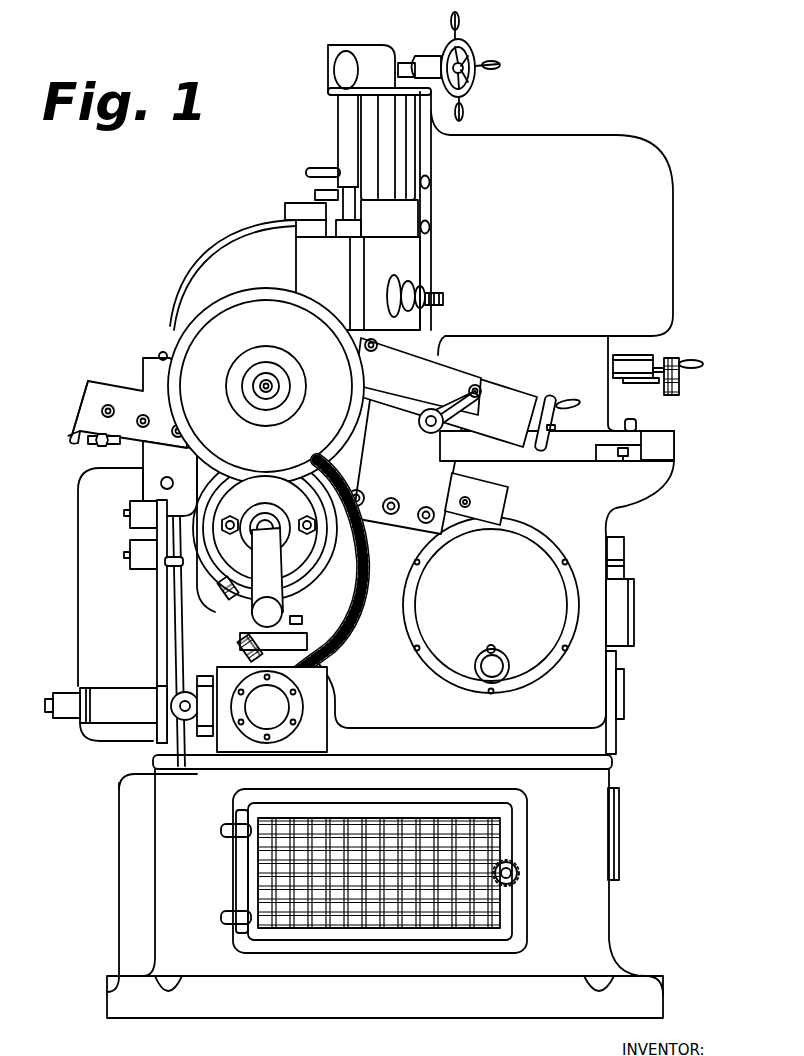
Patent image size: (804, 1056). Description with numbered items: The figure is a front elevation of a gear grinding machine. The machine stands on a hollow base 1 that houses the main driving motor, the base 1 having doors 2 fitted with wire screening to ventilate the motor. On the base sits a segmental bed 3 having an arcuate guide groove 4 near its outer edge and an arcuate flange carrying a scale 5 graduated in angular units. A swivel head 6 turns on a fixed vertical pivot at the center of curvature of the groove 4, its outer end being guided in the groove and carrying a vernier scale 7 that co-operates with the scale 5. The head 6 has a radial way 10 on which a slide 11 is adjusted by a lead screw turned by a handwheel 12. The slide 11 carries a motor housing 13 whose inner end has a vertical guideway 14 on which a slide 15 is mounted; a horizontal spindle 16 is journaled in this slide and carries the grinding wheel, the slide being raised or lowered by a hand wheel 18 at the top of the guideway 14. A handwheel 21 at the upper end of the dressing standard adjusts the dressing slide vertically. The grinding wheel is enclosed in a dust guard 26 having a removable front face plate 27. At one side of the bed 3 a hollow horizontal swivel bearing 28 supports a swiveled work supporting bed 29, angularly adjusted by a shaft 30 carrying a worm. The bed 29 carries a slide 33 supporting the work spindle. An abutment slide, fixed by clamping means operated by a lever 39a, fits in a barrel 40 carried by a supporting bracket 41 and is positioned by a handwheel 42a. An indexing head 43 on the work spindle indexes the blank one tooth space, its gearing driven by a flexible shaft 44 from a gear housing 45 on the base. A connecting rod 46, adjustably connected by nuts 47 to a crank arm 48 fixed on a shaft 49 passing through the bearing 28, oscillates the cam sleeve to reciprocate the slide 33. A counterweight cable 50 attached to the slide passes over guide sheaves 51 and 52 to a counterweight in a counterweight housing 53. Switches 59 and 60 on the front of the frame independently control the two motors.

The hollow base 1 is at (180, 900).
The doors 2 is at (508, 833).
The bed 3 is at (614, 508).
The arcuate guide groove 4 is at (619, 448).
The scale 5 is at (658, 426).
The swivel head 6 is at (596, 415).
The vernier scale 7 is at (656, 418).
The radial way 10 is at (614, 385).
The slide 11 is at (588, 348).
The handwheel 12 is at (669, 358).
The motor housing 13 is at (619, 157).
The vertical guideway 14 is at (420, 208).
The slide 15 is at (398, 257).
The spindle 16 is at (447, 299).
The hand wheel 18 is at (475, 43).
The handwheel 21 is at (321, 170).
The dust guard 26 is at (250, 232).
The removable front face plate 27 is at (213, 232).
The swivel bearing 28 is at (293, 500).
The work supporting bed 29 is at (157, 448).
The shaft 30 is at (186, 548).
The slide 33 is at (98, 395).
The lever 39a is at (470, 392).
The barrel 40 is at (503, 403).
The supporting bracket 41 is at (408, 505).
The handwheel 42a is at (537, 447).
The indexing head 43 is at (200, 346).
The flexible shaft 44 is at (363, 574).
The gear housing 45 is at (301, 704).
The connecting rod 46 is at (197, 517).
The nuts 47 is at (243, 650).
The crank arm 48 is at (273, 587).
The shaft 49 is at (262, 535).
The counterweight cable 50 is at (120, 446).
The guide sheave 51 is at (138, 482).
The guide sheave 52 is at (170, 703).
The counterweight housing 53 is at (133, 803).
The switch 59 is at (120, 515).
The switch 60 is at (120, 561).